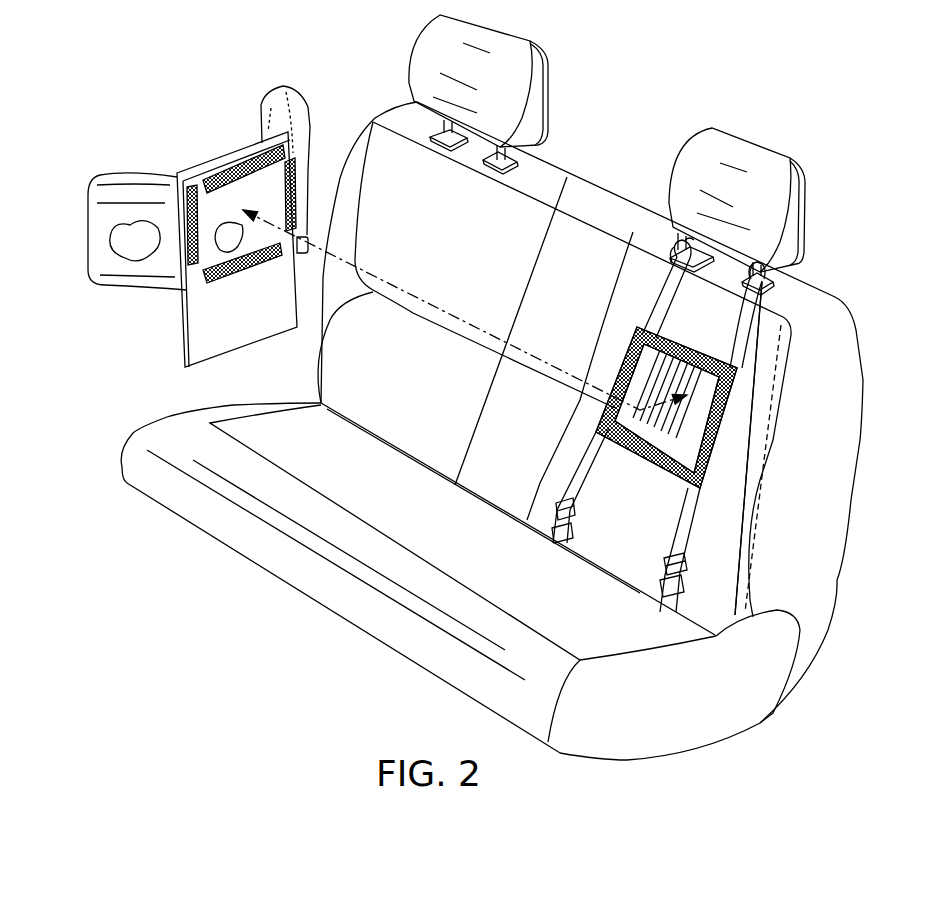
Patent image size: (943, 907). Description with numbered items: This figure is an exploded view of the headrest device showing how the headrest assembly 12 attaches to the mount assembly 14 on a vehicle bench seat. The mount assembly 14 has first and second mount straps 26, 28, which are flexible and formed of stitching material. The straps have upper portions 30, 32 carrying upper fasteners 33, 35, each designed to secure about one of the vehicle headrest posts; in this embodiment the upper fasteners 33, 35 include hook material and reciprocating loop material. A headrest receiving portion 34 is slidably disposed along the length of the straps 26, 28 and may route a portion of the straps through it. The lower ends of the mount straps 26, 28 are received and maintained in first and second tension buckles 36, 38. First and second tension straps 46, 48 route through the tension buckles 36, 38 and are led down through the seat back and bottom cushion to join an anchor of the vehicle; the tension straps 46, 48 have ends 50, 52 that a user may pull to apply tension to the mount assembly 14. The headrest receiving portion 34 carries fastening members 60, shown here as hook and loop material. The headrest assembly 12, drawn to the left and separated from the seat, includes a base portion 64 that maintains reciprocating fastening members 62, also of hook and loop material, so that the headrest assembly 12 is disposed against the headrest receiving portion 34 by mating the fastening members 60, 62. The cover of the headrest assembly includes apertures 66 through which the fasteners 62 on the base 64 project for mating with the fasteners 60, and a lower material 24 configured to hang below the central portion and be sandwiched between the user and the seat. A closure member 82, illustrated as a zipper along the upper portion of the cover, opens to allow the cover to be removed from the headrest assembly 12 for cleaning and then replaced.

The headrest assembly 12 is at (194, 212).
The mount assembly 14 is at (757, 323).
The lower material 24 is at (203, 347).
The first mount strap 26 is at (740, 357).
The second mount strap 28 is at (654, 312).
The upper portion 30 is at (755, 300).
The upper portion 32 is at (675, 262).
The upper fastener 33 is at (765, 270).
The headrest receiving portion 34 is at (693, 428).
The upper fastener 35 is at (680, 245).
The first tension buckle 36 is at (687, 573).
The second tension buckle 38 is at (560, 500).
The first tension strap 46 is at (675, 593).
The second tension strap 48 is at (569, 537).
The end 50 is at (693, 533).
The end 52 is at (590, 480).
The fastening members 60 is at (617, 360).
The fastening members 62 is at (297, 167).
The base portion 64 is at (120, 237).
The apertures 66 is at (262, 157).
The closure member 82 is at (290, 88).